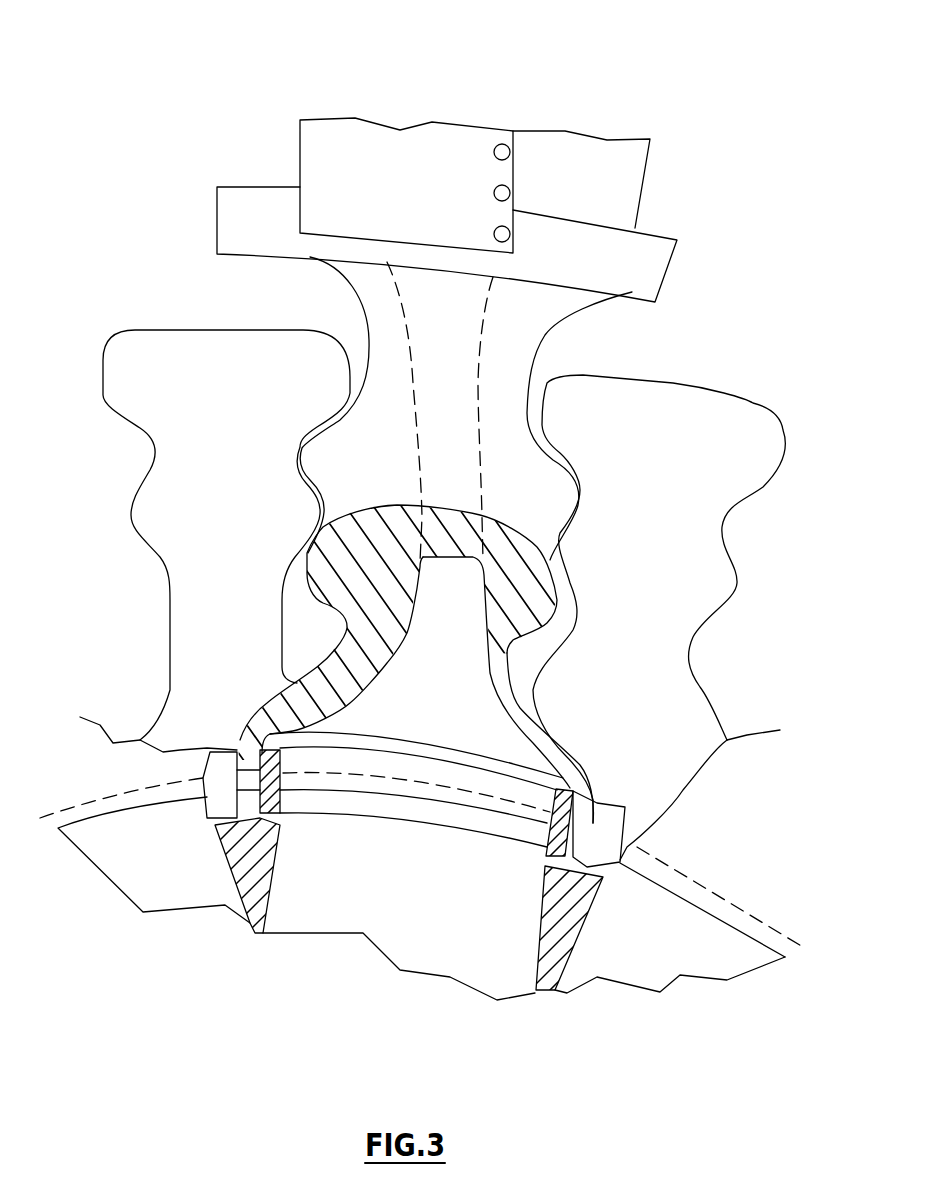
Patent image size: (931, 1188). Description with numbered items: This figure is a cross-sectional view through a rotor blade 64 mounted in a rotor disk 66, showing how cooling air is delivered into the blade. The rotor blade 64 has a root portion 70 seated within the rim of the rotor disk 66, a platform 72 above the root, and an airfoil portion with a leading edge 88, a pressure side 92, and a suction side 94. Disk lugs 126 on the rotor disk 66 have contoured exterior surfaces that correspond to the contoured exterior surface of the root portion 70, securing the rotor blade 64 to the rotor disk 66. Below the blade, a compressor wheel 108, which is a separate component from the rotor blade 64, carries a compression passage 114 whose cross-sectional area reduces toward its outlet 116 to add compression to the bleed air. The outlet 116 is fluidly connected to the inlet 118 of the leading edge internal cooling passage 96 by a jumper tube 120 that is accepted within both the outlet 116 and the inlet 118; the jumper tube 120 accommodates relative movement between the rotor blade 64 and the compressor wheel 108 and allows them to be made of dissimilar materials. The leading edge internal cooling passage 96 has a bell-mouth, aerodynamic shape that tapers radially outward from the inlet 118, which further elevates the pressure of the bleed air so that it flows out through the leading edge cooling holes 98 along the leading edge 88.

The rotor blade 64 is at (177, 47).
The rotor disk 66 is at (660, 973).
The root portion 70 is at (568, 312).
The platform 72 is at (665, 238).
The leading edge 88 is at (514, 177).
The pressure side 92 is at (620, 170).
The suction side 94 is at (357, 163).
The leading edge internal cooling passage 96 is at (468, 623).
The leading edge cooling holes 98 is at (500, 144).
The compressor wheel 108 is at (547, 990).
The compression passage 114 is at (327, 903).
The outlet 116 is at (550, 851).
The inlet 118 is at (575, 788).
The jumper tube 120 is at (588, 831).
The disk lugs 126 is at (110, 347).